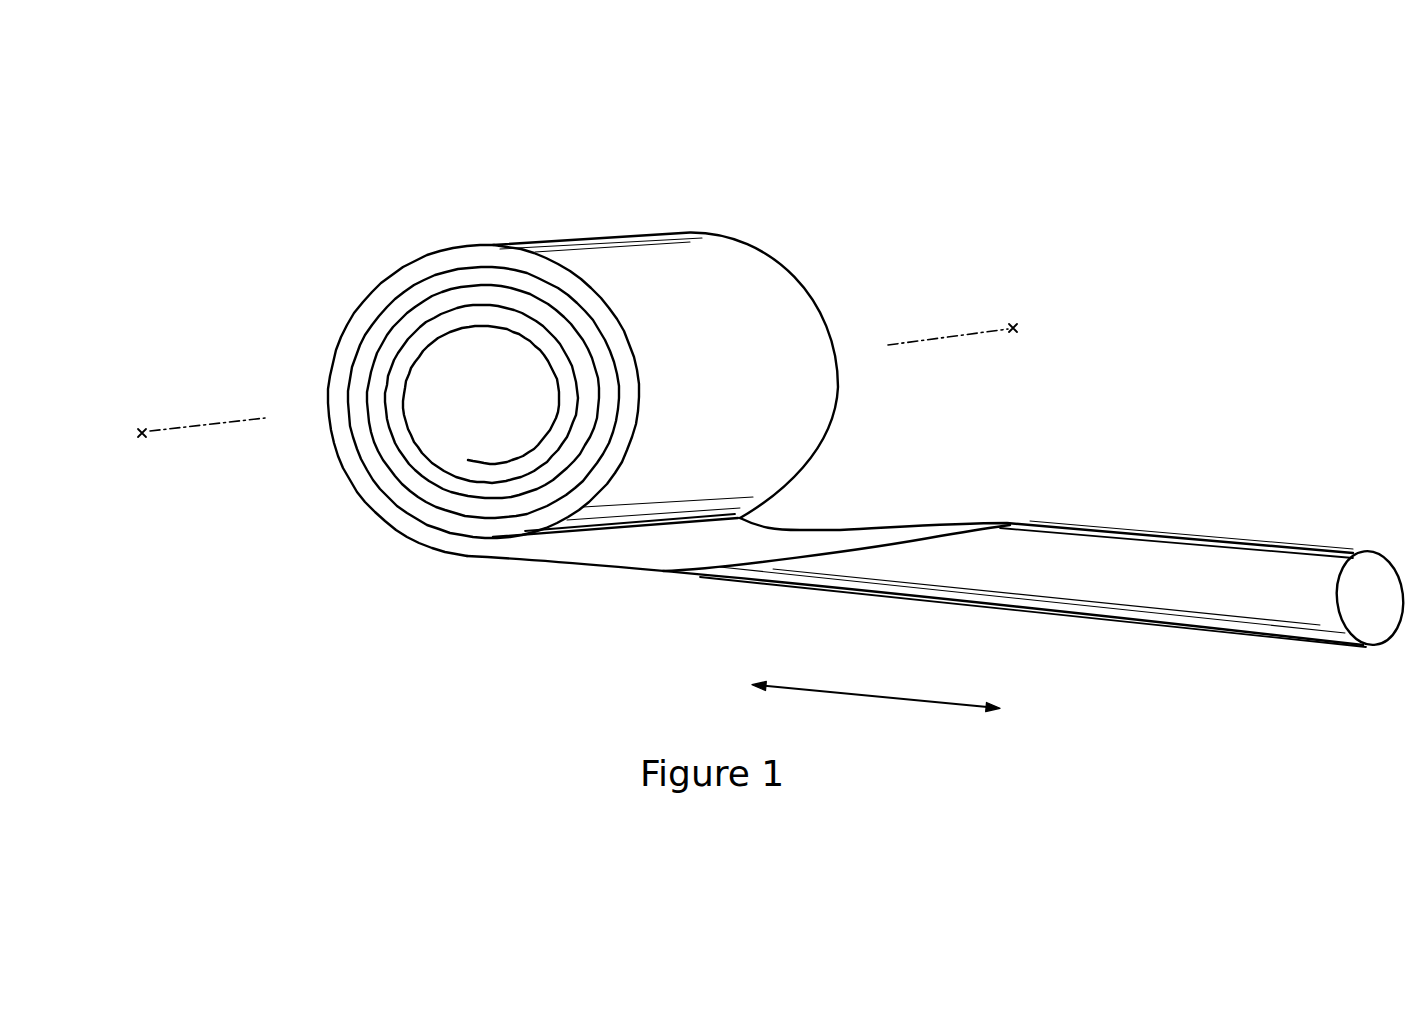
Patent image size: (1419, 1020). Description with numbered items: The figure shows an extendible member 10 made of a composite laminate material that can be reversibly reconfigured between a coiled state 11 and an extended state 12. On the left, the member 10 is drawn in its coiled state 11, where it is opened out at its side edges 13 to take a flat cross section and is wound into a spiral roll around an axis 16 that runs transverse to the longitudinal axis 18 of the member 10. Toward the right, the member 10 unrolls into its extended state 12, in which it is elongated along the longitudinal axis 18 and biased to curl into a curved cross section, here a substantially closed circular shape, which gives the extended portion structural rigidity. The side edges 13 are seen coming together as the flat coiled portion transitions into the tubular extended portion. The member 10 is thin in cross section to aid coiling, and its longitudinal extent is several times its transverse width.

The extendible member 10 is at (832, 200).
The coiled state 11 is at (383, 320).
The extended state 12 is at (1132, 551).
The side edges 13 is at (793, 527).
The axis 16 is at (576, 382).
The longitudinal axis 18 is at (876, 686).